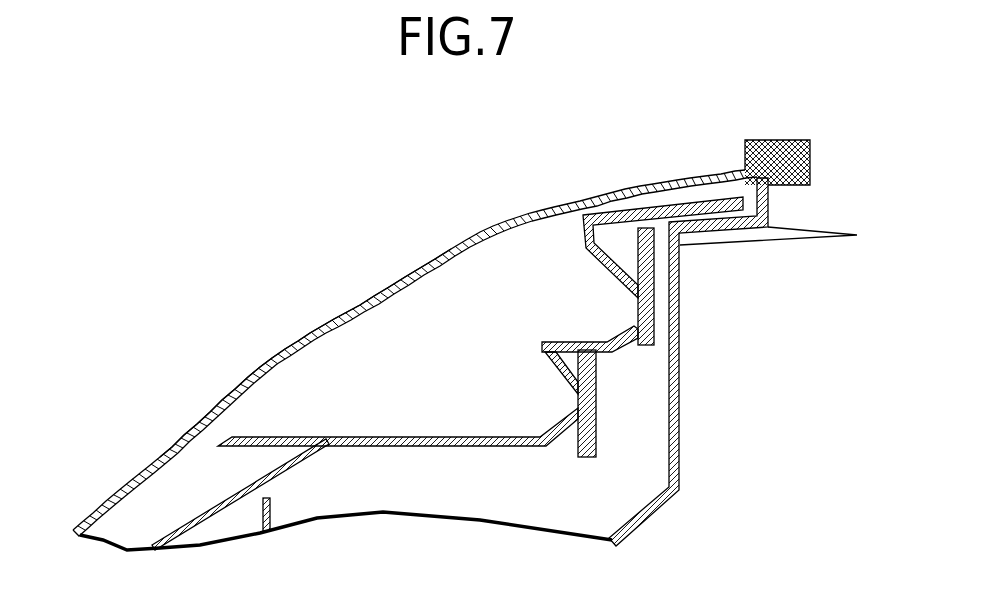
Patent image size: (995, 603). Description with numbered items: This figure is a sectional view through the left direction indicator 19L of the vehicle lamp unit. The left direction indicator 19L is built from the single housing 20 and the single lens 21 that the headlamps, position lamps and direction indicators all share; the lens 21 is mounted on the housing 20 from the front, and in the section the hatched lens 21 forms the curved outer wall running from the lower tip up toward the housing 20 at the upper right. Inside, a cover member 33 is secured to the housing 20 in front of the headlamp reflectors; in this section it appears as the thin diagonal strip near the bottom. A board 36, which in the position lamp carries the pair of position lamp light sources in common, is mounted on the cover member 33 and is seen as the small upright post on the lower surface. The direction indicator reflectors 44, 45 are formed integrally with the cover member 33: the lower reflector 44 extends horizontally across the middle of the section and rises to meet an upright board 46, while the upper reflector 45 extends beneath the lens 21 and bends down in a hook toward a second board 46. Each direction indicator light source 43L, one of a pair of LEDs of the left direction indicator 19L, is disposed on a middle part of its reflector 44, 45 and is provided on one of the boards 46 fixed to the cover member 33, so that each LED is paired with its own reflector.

The left direction indicator 19L is at (453, 247).
The lens 21 is at (357, 307).
The direction indicator reflector 45 is at (608, 263).
The board 46 is at (655, 277).
The housing 20 is at (679, 397).
The direction indicator light source 43L is at (574, 392).
The direction indicator reflector 44 is at (558, 430).
The cover member 33 is at (200, 513).
The board 36 is at (272, 513).